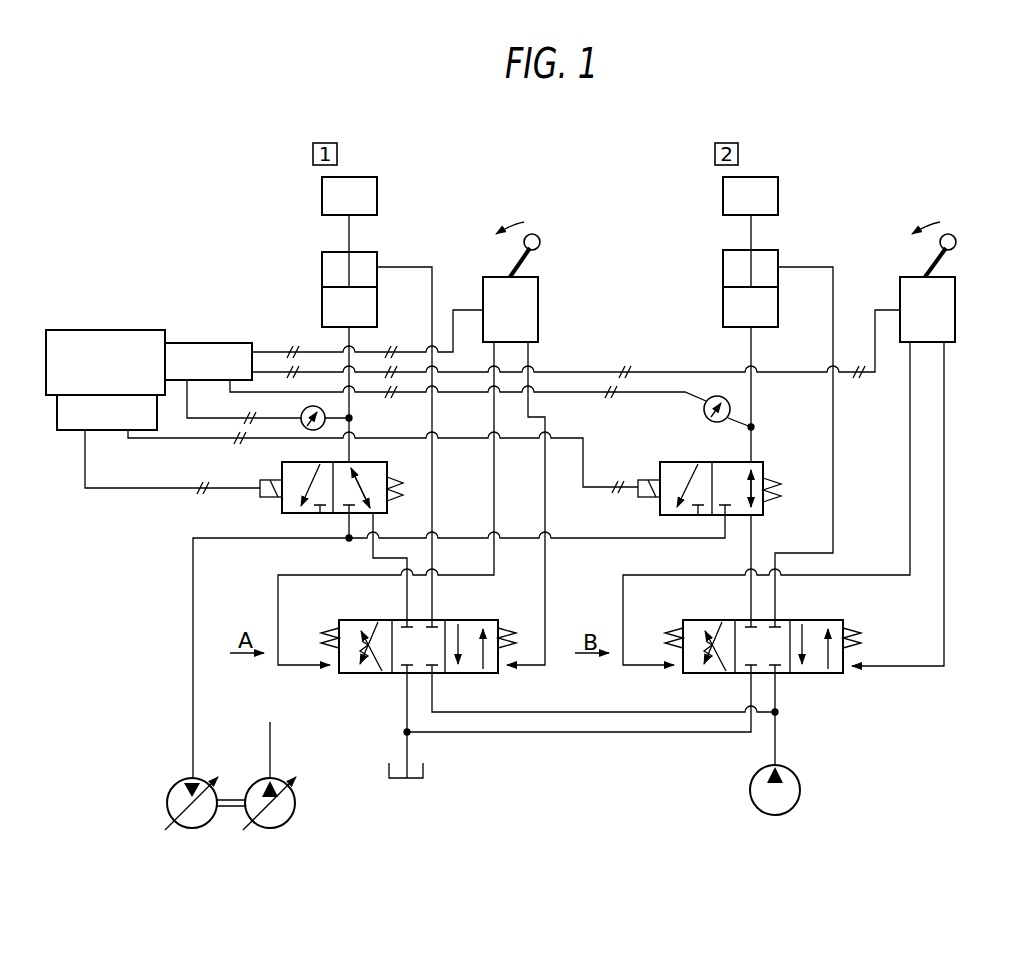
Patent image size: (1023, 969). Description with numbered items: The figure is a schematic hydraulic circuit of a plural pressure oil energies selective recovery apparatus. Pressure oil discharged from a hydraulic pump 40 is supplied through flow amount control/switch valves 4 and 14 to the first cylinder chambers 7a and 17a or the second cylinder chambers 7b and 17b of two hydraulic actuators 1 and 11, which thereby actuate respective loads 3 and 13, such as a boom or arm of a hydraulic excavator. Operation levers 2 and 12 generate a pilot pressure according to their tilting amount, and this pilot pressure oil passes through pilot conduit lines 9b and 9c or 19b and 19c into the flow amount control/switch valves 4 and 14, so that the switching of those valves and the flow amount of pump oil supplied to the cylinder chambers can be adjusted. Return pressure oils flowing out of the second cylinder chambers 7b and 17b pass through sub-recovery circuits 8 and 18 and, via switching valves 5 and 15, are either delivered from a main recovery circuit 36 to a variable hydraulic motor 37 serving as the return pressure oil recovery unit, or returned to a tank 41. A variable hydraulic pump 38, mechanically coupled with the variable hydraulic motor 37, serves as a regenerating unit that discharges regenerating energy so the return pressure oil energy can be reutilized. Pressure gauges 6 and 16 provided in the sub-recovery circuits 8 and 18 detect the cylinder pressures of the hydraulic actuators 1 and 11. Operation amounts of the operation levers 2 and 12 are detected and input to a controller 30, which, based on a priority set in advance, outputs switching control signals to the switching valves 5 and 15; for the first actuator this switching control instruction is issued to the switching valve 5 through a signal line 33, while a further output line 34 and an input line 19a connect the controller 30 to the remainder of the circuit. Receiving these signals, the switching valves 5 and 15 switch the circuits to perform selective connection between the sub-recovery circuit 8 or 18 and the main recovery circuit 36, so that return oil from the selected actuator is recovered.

The hydraulic actuator 1 is at (340, 277).
The operation lever 2 is at (540, 279).
The load 3 is at (378, 193).
The flow amount control/switch valve 4 is at (498, 621).
The switching valve 5 is at (388, 463).
The pressure gauge 6 is at (301, 412).
The first cylinder chamber 7a is at (378, 256).
The second cylinder chamber 7b is at (320, 255).
The sub-recovery circuit 8 is at (345, 335).
The pilot conduit line 9b is at (494, 500).
The pilot conduit line 9c is at (546, 502).
The hydraulic actuator 11 is at (745, 277).
The operation lever 12 is at (957, 278).
The load 13 is at (779, 193).
The flow amount control/switch valve 14 is at (843, 621).
The switching valve 15 is at (659, 464).
The pressure gauge 16 is at (703, 409).
The first cylinder chamber 17a is at (779, 256).
The second cylinder chamber 17b is at (721, 255).
The sub-recovery circuit 18 is at (752, 338).
The signal line 19a is at (663, 370).
The pilot conduit line 19b is at (910, 497).
The pilot conduit line 19c is at (945, 510).
The controller 30 is at (104, 328).
The signal line 33 is at (137, 488).
The output signal line 34 is at (153, 440).
The main recovery circuit 36 is at (193, 598).
The variable hydraulic motor 37 is at (167, 803).
The variable hydraulic pump 38 is at (296, 803).
The hydraulic pump 40 is at (750, 790).
The tank 41 is at (415, 779).